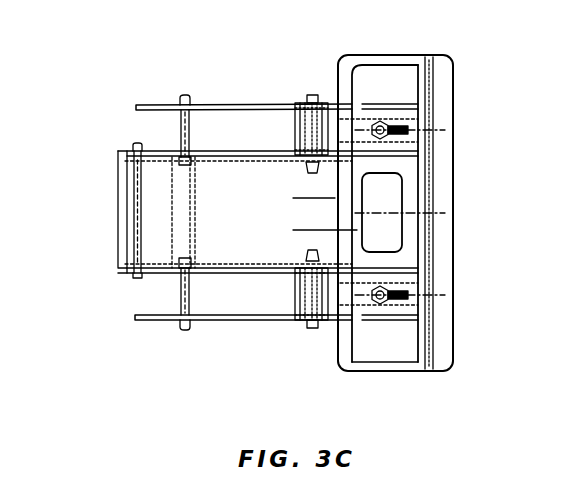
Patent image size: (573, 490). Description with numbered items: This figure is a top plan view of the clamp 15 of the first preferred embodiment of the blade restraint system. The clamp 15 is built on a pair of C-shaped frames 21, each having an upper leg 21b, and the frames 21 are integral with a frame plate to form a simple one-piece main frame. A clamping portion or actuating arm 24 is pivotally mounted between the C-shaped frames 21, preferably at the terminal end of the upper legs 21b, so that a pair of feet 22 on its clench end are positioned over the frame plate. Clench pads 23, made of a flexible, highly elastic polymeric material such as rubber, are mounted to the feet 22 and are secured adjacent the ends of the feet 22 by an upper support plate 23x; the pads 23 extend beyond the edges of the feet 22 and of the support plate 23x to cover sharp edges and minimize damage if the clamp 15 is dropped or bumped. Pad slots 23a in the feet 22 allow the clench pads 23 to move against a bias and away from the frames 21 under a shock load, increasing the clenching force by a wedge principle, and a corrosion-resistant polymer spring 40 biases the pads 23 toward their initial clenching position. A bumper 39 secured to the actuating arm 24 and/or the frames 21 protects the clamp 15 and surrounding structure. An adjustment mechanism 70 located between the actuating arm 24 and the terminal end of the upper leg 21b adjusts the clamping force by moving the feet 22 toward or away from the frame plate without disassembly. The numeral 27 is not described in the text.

The clamp 15 is at (213, 74).
The C-shaped frames 21 is at (150, 85).
The upper leg 21b is at (270, 108).
The feet 22 is at (356, 112).
The clench pads 23 is at (443, 120).
The pad slots 23a is at (405, 131).
The upper support plate 23x is at (408, 77).
The actuating arm 24 is at (217, 255).
The hidden plate 27 is at (300, 222).
The bumper 39 is at (117, 248).
The polymer spring 40 is at (400, 137).
The adjustment mechanism 70 is at (308, 95).